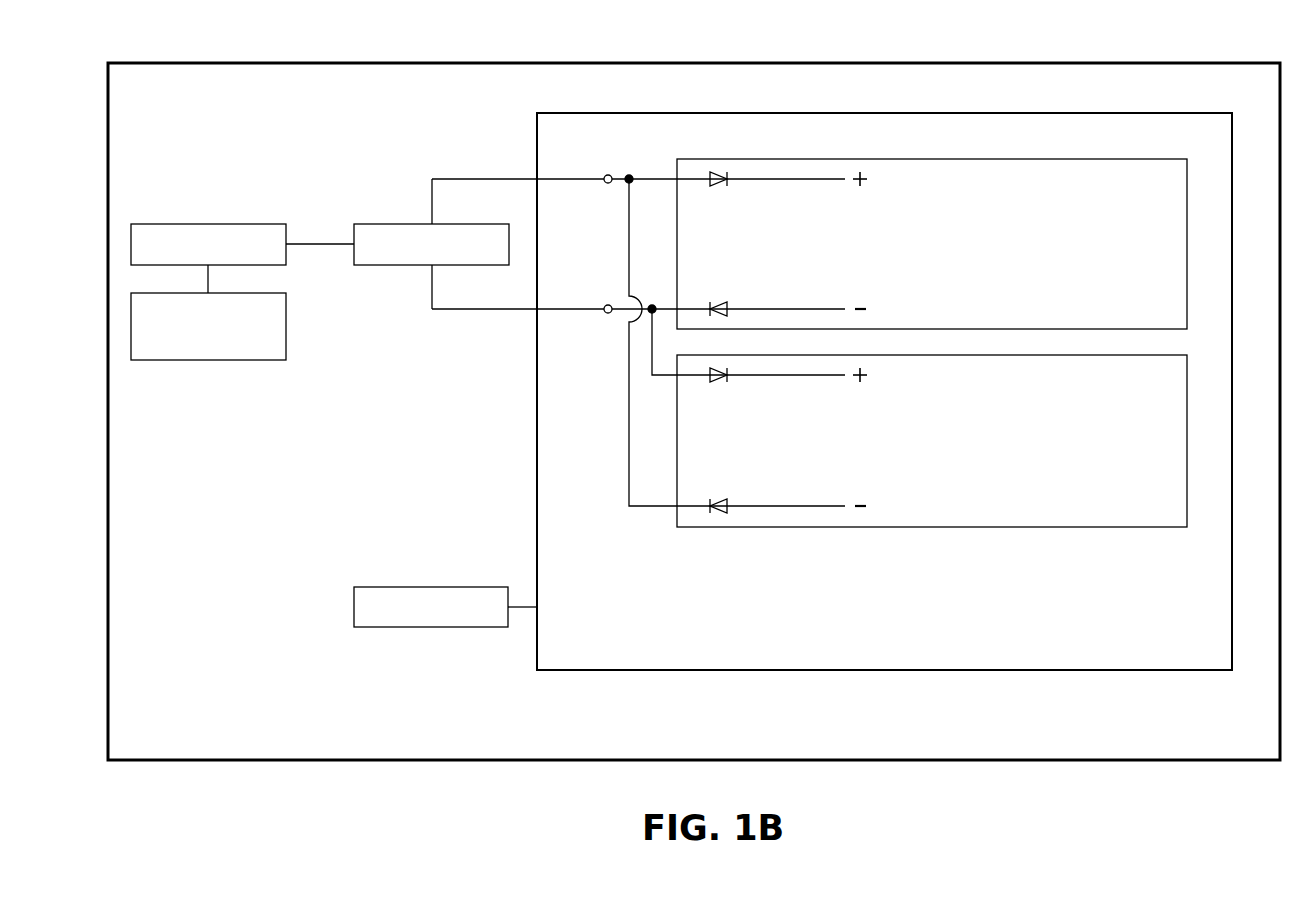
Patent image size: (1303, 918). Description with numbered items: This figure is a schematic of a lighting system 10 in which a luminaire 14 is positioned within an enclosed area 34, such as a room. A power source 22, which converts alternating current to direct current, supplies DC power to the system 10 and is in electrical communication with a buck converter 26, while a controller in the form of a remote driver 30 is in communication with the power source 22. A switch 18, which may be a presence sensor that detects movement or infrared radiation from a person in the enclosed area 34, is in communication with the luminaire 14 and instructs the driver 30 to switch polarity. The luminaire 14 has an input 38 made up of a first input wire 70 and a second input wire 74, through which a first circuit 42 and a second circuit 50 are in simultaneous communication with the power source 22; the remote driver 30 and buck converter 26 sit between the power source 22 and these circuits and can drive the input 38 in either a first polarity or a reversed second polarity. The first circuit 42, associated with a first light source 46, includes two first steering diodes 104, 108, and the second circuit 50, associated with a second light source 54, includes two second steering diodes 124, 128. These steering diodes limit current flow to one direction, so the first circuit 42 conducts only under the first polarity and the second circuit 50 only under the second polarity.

The system 10 is at (318, 522).
The luminaire 14 is at (537, 530).
The switch 18 is at (431, 627).
The power source 22 is at (208, 224).
The buck converter 26 is at (392, 224).
The remote driver 30 is at (208, 360).
The enclosed area 34 is at (1243, 63).
The input 38 is at (493, 348).
The first circuit 42 is at (1146, 159).
The first light source 46 is at (1041, 259).
The second circuit 50 is at (1146, 527).
The second light source 54 is at (1044, 457).
The first input wire 70 is at (481, 179).
The second input wire 74 is at (481, 309).
The first steering diode 104 is at (720, 187).
The first steering diode 108 is at (719, 302).
The second steering diode 124 is at (720, 383).
The second steering diode 128 is at (719, 499).